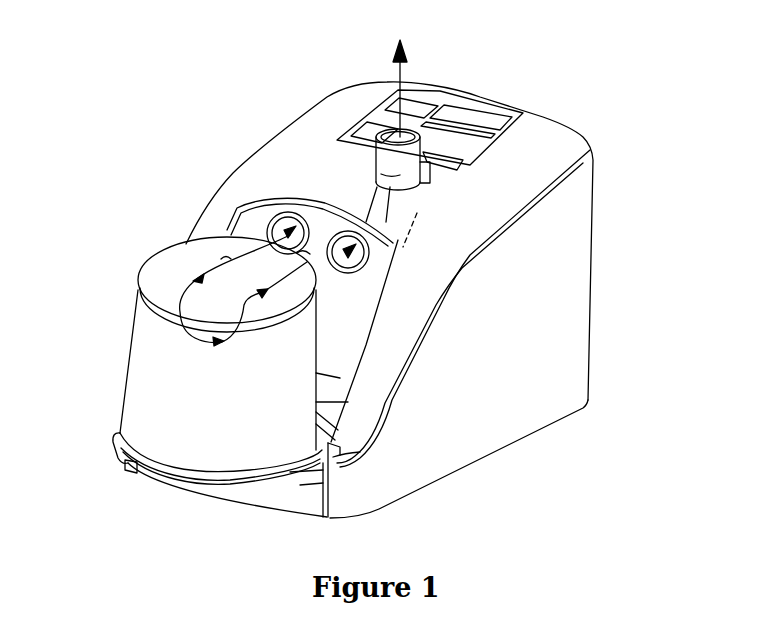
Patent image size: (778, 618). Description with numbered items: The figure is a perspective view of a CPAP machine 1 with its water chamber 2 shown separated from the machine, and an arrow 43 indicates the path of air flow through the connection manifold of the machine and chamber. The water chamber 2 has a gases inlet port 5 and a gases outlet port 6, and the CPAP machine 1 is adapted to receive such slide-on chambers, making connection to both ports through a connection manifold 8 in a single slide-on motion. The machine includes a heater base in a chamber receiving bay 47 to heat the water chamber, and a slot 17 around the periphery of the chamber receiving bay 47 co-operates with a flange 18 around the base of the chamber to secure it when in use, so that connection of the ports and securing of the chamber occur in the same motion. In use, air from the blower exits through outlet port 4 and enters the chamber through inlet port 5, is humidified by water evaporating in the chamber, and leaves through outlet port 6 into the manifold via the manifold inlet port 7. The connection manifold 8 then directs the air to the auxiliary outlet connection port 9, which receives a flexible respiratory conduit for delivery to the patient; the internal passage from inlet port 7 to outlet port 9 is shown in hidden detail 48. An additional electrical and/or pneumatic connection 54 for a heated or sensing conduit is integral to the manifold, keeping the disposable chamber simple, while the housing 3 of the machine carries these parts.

The CPAP machine 1 is at (196, 98).
The water chamber 2 is at (153, 390).
The housing 3 is at (552, 299).
The outlet port 4 is at (283, 238).
The gases inlet port 5 is at (307, 262).
The gases outlet port 6 is at (307, 262).
The manifold inlet port 7 is at (322, 245).
The connection manifold 8 is at (316, 193).
The auxiliary outlet connection port 9 is at (386, 134).
The slot 17 is at (328, 457).
The flange 18 is at (113, 440).
The arrow 43 is at (405, 53).
The chamber receiving bay 47 is at (335, 343).
The hidden detail 48 is at (417, 213).
The electrical and/or pneumatic connection 54 is at (420, 237).